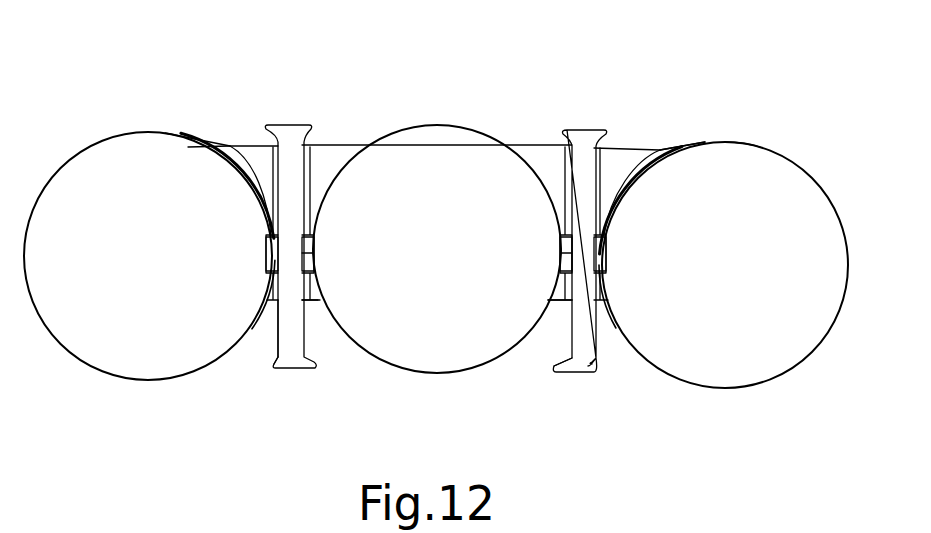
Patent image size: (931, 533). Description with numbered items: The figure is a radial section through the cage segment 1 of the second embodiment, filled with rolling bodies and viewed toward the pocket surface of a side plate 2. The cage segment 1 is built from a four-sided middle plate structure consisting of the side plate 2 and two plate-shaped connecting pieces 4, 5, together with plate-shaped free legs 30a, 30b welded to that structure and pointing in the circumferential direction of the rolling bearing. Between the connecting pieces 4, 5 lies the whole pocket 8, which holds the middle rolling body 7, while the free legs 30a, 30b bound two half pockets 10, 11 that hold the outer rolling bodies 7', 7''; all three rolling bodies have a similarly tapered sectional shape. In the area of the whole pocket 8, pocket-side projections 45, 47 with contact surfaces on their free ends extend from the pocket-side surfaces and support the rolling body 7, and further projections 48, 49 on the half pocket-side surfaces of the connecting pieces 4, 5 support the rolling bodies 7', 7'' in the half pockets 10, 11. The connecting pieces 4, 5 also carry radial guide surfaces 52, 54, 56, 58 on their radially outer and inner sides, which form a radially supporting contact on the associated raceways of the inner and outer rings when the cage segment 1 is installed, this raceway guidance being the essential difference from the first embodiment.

The cage segment 1 is at (758, 79).
The side plate 2 is at (343, 145).
The connecting piece 4 is at (280, 328).
The connecting piece 5 is at (595, 338).
The rolling body 7 is at (437, 249).
The rolling body 7' is at (148, 256).
The rolling body 7'' is at (725, 265).
The whole pocket 8 is at (513, 103).
The half pocket 10 is at (177, 95).
The half pocket 11 is at (713, 101).
The free leg 30a is at (232, 145).
The free leg 30b is at (625, 148).
The pocket-side projection 45 is at (312, 262).
The pocket-side projection 47 is at (560, 258).
The projection 48 is at (265, 255).
The projection 49 is at (606, 262).
The radial guide surface 52 is at (285, 122).
The radial guide surface 54 is at (577, 128).
The radial guide surface 56 is at (293, 368).
The radial guide surface 58 is at (563, 372).